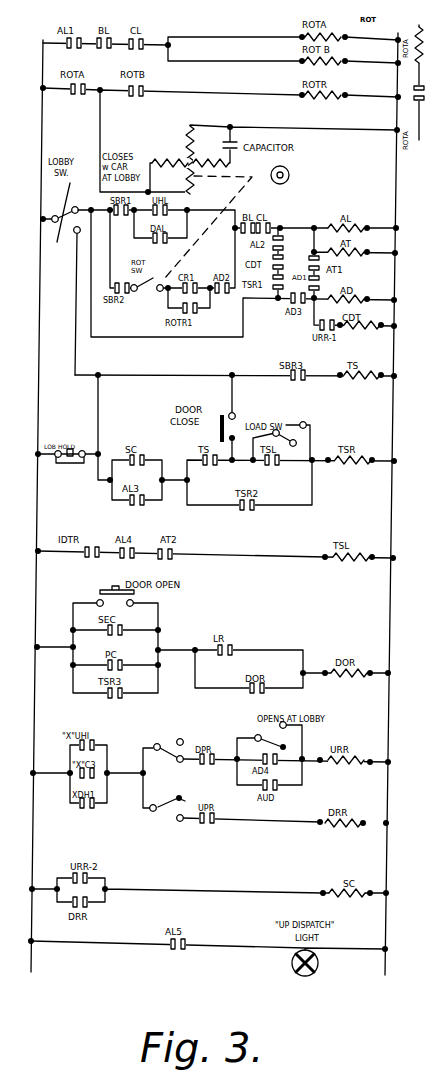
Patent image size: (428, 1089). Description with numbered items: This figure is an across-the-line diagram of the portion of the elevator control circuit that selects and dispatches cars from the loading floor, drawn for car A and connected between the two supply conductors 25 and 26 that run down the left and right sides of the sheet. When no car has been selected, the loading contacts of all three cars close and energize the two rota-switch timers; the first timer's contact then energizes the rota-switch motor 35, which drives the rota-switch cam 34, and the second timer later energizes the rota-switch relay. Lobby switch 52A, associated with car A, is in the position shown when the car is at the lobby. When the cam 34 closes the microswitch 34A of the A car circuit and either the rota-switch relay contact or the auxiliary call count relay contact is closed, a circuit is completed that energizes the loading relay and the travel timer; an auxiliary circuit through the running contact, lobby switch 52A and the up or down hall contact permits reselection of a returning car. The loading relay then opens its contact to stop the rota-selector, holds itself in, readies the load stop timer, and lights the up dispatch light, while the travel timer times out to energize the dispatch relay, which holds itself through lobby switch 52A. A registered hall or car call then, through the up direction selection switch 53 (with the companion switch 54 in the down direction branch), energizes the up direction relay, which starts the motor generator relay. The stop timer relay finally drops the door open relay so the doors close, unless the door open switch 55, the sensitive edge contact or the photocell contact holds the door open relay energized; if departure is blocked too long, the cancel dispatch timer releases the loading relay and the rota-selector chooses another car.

The supply line conductor 25 is at (43, 42).
The supply line conductor 26 is at (398, 36).
The selector cam 34 is at (289, 175).
The microswitch 34A is at (146, 300).
The rota-switch motor 35 is at (186, 146).
The lobby switch 52A is at (62, 238).
The up direction selection switch 53 is at (166, 745).
The dispatch switch 54 is at (165, 813).
The door open switch 55 is at (107, 590).